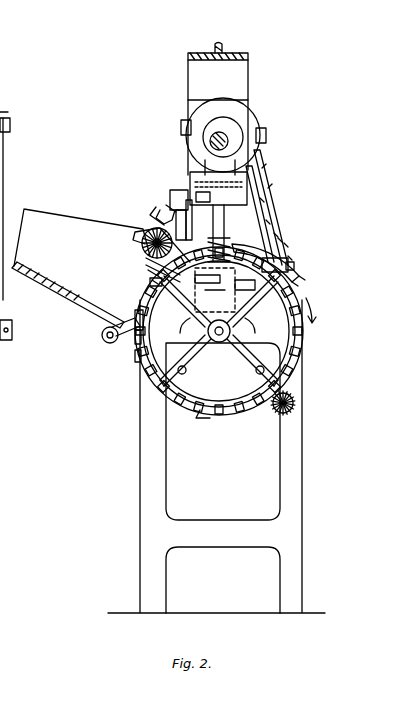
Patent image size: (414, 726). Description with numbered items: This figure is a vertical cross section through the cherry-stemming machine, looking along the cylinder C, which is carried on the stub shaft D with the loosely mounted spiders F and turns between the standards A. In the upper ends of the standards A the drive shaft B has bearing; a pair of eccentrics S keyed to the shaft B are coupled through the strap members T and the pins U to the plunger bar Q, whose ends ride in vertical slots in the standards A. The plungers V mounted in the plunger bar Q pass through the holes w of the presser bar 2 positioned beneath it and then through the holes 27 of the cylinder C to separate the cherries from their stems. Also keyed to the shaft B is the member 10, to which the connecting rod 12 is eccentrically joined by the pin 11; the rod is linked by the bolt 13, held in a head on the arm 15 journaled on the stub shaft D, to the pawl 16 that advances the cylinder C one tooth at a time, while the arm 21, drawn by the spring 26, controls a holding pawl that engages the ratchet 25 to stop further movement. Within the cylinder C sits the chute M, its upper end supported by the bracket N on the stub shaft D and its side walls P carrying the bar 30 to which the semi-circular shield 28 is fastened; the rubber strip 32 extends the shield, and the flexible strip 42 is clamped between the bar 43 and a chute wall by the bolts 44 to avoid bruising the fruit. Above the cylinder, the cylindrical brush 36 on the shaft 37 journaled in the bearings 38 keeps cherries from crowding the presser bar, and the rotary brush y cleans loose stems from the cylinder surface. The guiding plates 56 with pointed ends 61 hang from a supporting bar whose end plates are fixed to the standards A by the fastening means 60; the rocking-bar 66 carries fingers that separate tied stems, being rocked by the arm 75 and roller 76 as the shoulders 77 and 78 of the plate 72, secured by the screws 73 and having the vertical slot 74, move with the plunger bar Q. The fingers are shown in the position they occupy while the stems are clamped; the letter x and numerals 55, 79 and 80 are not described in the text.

The standards A is at (302, 468).
The drive shaft B is at (219, 132).
The cylinder C is at (303, 367).
The stub shaft D is at (300, 343).
The eccentrics S is at (240, 128).
The strap members T is at (257, 168).
The pins U is at (258, 185).
The plungers V is at (262, 212).
The plunger bar Q is at (262, 200).
The chute M is at (312, 326).
The bracket N is at (222, 342).
The spiders F is at (219, 388).
The side walls P is at (250, 315).
The holes w is at (181, 326).
The slot x is at (215, 291).
The rotary brush y is at (262, 425).
The presser bar 2 is at (275, 235).
The member 10 is at (8, 105).
The pin 11 is at (10, 126).
The connecting rod 12 is at (5, 152).
The bolt 13 is at (104, 336).
The arm 15 is at (9, 341).
The pawl 16 is at (122, 326).
The arm 21 is at (262, 170).
The ratchet 25 is at (305, 352).
The spring 26 is at (270, 190).
The holes 27 is at (205, 410).
The shield 28 is at (136, 348).
The bar 30 is at (152, 368).
The strip of rubber 32 is at (202, 290).
The brush 36 is at (144, 248).
The shaft 37 is at (150, 259).
The bearings 38 is at (140, 232).
The strip of flexible material 42 is at (300, 272).
The bar 43 is at (298, 285).
The bolts 44 is at (305, 280).
The brush arm 55 is at (148, 276).
The guiding plates 56 is at (143, 262).
The screws or other fastening means 60 is at (280, 240).
The pointed ends 61 is at (120, 205).
The rocking-bar 66 is at (130, 200).
The plate 72 is at (185, 175).
The screws 73 is at (180, 185).
The vertical slot 74 is at (155, 195).
The arm 75 is at (168, 205).
The roller 76 is at (180, 200).
The shoulder 77 is at (262, 205).
The shoulder 78 is at (268, 222).
The pin 79 is at (290, 258).
The pin 80 is at (285, 245).